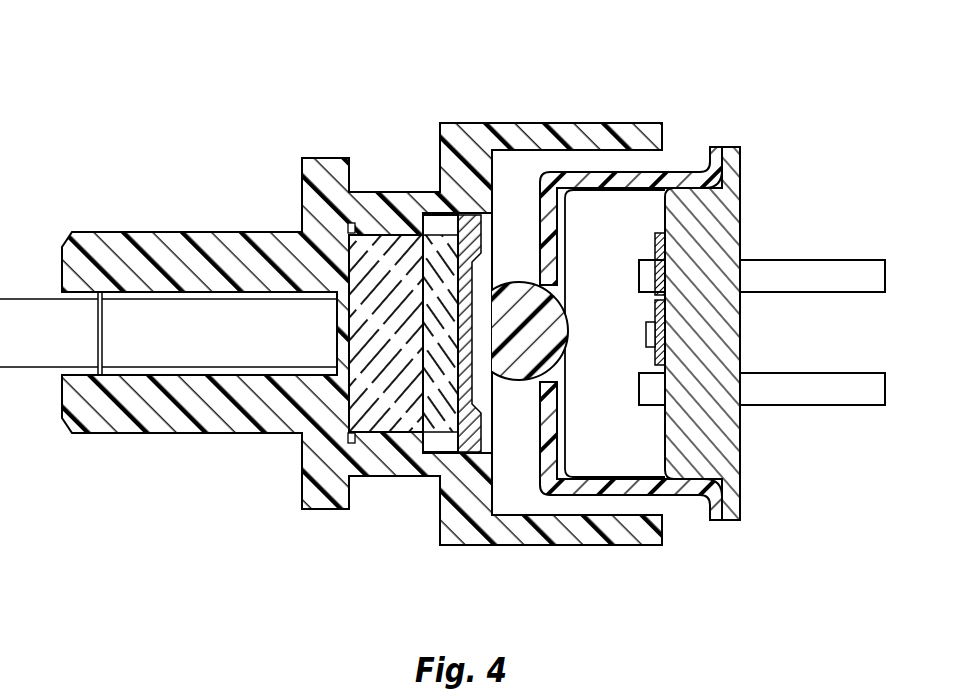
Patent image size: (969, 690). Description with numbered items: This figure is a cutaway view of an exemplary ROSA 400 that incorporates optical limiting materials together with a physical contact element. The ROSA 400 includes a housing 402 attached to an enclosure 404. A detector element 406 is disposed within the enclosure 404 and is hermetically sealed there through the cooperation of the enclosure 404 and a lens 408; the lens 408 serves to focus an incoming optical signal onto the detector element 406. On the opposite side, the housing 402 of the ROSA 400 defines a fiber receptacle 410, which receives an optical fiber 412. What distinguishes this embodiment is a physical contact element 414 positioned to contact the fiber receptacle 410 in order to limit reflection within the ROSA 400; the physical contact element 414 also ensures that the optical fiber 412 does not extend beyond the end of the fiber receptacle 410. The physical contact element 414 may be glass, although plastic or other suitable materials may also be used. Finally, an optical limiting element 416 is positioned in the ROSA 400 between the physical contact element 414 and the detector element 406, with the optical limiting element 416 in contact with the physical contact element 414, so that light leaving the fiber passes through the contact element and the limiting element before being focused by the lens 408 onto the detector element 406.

The ROSA 400 is at (166, 63).
The housing 402 is at (328, 158).
The enclosure 404 is at (670, 172).
The detector element 406 is at (646, 335).
The lens 408 is at (514, 285).
The fiber receptacle 410 is at (200, 373).
The optical fiber 412 is at (140, 367).
The physical contact element 414 is at (388, 435).
The optical limiting element 416 is at (438, 442).